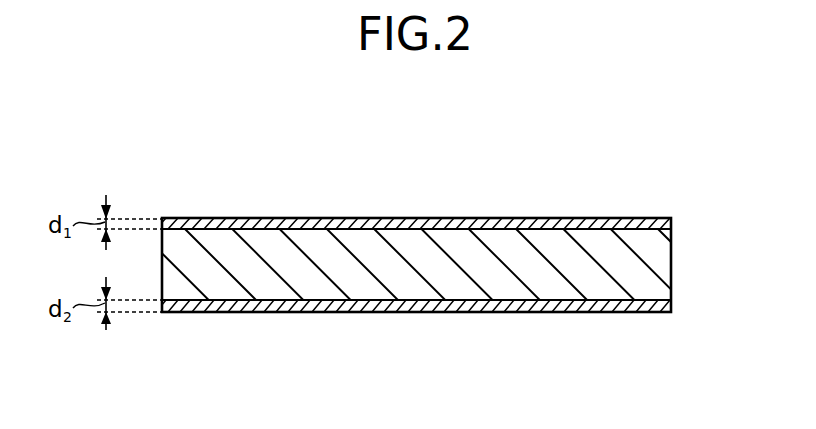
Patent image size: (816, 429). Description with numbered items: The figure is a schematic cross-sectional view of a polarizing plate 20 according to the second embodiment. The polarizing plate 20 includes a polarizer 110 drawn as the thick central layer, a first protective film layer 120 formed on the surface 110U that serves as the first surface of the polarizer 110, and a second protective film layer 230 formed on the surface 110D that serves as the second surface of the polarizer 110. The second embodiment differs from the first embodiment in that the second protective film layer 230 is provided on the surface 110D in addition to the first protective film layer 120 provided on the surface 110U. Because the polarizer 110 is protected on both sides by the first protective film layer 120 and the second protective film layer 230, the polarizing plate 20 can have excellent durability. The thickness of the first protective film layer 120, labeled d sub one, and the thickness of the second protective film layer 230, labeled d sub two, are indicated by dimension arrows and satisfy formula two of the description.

The polarizing plate 20 is at (604, 147).
The polarizer 110 is at (657, 263).
The surface 110U is at (433, 222).
The surface 110D is at (425, 302).
The first protective film layer 120 is at (672, 222).
The second protective film layer 230 is at (672, 305).